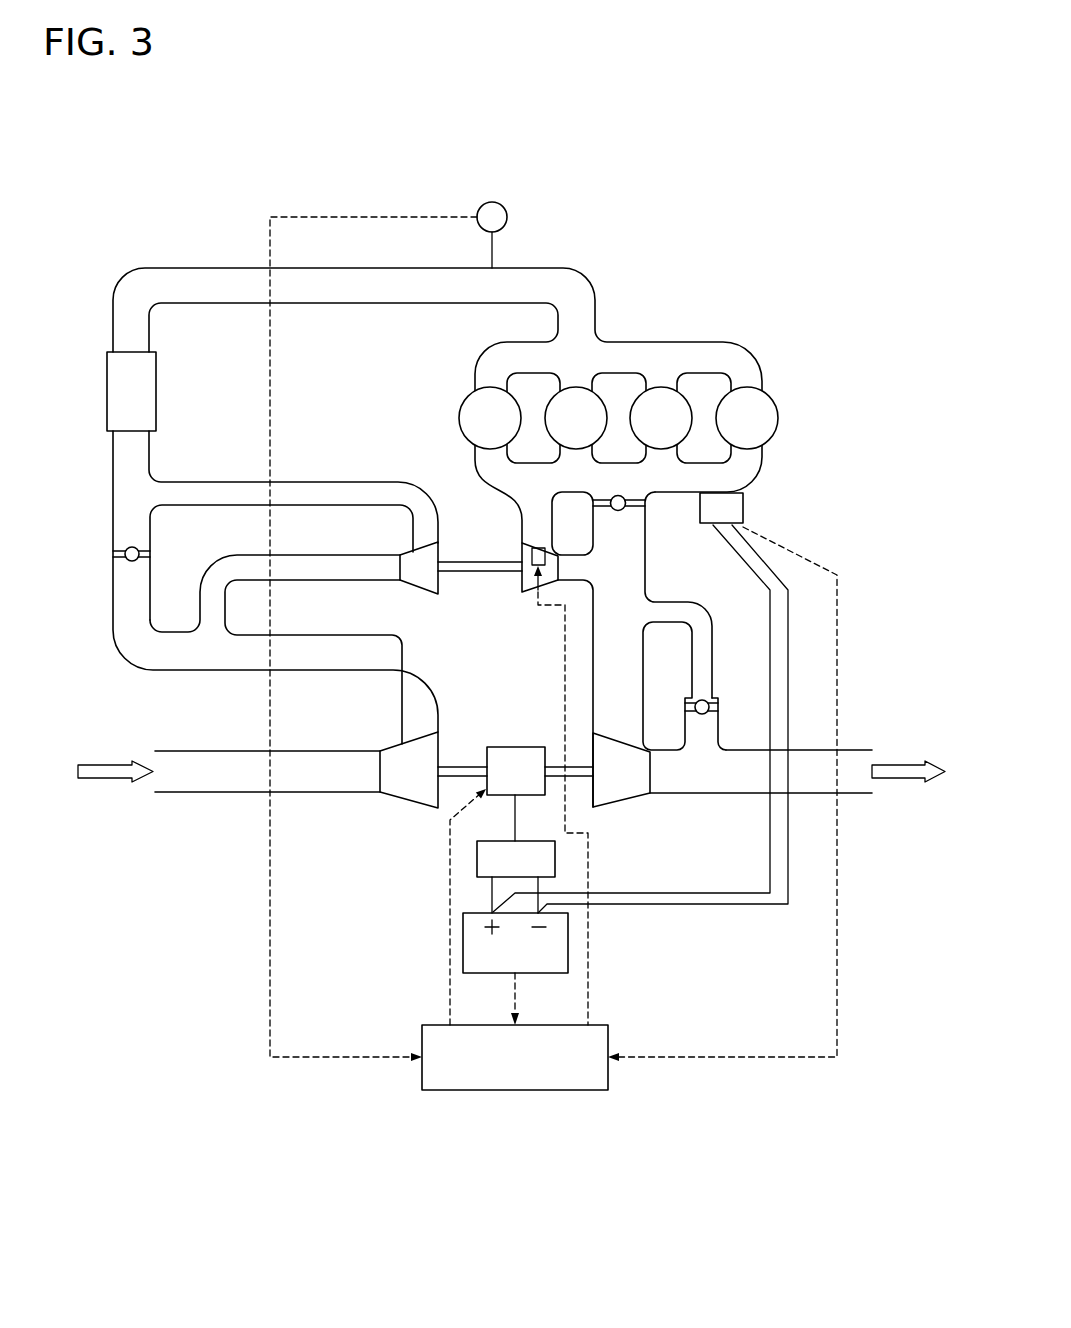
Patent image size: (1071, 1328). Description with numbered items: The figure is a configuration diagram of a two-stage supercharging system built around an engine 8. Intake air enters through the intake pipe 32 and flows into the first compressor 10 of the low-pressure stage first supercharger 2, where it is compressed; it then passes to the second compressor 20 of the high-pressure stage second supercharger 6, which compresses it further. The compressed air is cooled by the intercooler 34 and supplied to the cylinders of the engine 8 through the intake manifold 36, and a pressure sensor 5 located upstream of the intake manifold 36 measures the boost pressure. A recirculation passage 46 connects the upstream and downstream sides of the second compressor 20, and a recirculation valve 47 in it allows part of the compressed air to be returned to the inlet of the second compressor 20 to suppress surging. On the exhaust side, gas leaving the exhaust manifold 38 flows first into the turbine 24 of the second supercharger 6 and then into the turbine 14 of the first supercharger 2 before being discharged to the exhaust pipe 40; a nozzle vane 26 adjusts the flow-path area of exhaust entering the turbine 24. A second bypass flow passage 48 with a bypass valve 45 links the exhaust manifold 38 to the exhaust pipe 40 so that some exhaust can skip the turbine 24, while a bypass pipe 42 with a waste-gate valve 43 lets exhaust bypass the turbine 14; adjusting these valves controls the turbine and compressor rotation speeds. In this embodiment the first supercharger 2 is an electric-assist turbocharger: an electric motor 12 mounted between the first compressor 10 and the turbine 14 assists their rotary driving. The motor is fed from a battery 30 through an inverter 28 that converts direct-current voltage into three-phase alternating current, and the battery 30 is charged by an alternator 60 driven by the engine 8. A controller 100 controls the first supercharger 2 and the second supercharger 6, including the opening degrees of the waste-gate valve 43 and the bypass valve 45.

The first supercharger 2 is at (376, 833).
The pressure sensor 5 is at (492, 201).
The second supercharger 6 is at (484, 608).
The engine 8 is at (808, 405).
The first compressor 10 is at (393, 797).
The electric motor 12 is at (515, 747).
The turbine 14 is at (628, 798).
The second compressor 20 is at (417, 587).
The turbine 24 is at (530, 594).
The nozzle vane 26 is at (532, 550).
The inverter 28 is at (555, 858).
The battery 30 is at (568, 943).
The intake pipe 32 is at (185, 795).
The intercooler 34 is at (107, 393).
The intake manifold 36 is at (689, 342).
The exhaust manifold 38 is at (728, 488).
The exhaust pipe 40 is at (808, 795).
The bypass pipe 42 is at (712, 630).
The waste-gate valve 43 is at (705, 714).
The bypass valve 45 is at (620, 509).
The recirculation passage 46 is at (113, 612).
The recirculation valve 47 is at (125, 556).
The second bypass flow passage 48 is at (646, 569).
The alternator 60 is at (743, 510).
The controller 100 is at (515, 1090).